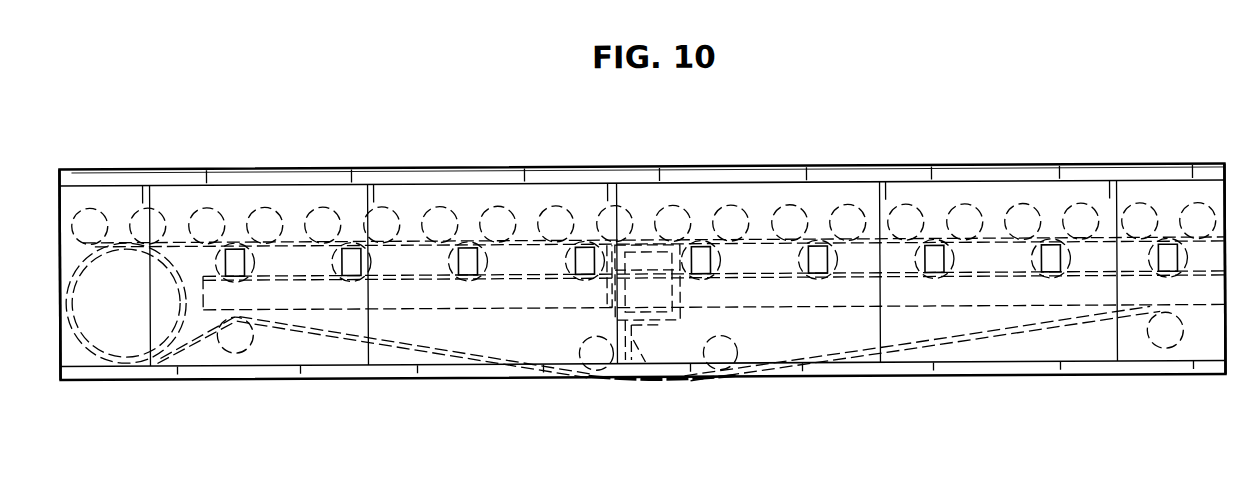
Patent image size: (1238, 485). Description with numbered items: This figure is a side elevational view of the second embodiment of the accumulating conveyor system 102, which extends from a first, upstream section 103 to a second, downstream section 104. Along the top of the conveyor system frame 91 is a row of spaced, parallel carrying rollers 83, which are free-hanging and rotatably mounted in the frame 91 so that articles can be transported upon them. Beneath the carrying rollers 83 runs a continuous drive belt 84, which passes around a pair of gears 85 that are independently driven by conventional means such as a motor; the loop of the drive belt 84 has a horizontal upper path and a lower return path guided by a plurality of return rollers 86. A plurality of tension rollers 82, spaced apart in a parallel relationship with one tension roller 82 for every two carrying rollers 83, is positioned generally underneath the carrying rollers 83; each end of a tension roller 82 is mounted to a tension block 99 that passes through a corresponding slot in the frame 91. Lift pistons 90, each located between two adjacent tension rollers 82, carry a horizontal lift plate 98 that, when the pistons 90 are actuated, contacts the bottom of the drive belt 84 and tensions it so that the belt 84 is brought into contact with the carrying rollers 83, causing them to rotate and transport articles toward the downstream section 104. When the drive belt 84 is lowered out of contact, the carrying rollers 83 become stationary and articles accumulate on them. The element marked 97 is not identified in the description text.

The tension rollers 82 is at (330, 264).
The carrying rollers 83 is at (205, 218).
The drive belt 84 is at (293, 243).
The gears 85 is at (107, 318).
The return rollers 86 is at (595, 352).
The lift pistons 90 is at (652, 297).
The conveyor system frame 91 is at (688, 167).
The belt return run 97 is at (647, 370).
The lift plate 98 is at (607, 273).
The tension block 99 is at (463, 257).
The conveyor system 102 is at (845, 108).
The upstream section 103 is at (153, 147).
The downstream section 104 is at (1179, 160).